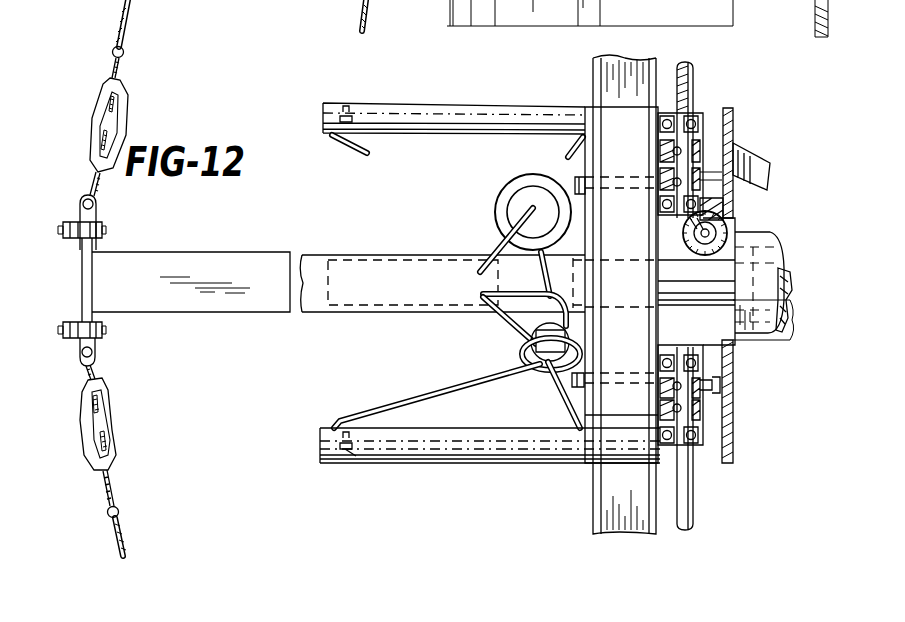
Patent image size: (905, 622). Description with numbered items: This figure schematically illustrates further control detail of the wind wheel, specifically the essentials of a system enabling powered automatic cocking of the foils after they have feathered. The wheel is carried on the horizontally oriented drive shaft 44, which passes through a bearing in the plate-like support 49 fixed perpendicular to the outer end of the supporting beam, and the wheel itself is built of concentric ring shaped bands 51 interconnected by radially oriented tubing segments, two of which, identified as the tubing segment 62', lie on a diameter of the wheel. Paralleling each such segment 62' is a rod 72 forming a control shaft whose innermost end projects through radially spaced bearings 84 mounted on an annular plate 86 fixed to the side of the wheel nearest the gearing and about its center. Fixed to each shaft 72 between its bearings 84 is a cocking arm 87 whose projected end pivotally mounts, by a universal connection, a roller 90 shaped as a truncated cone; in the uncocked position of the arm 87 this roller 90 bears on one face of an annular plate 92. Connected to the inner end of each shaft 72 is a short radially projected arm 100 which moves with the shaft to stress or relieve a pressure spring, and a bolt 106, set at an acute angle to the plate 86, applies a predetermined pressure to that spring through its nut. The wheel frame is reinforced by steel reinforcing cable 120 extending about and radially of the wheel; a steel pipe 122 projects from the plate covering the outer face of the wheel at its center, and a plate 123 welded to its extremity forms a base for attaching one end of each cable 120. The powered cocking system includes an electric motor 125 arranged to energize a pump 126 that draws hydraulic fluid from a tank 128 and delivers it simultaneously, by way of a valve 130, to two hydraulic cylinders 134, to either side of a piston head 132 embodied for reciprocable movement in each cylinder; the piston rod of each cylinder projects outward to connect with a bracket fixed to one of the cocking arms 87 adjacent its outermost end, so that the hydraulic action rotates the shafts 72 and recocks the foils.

The steel reinforcing cable 120 is at (121, 519).
The steel pipe 122 is at (250, 258).
The plate 123 is at (82, 276).
The electric motor 125 is at (511, 186).
The pump 126 is at (536, 190).
The tank 128 is at (397, 258).
The valve 130 is at (535, 341).
The piston head 132 is at (350, 102).
The hydraulic cylinder 134 is at (457, 110).
The tubing segment 62' is at (602, 290).
The rod (control shaft) 72 is at (691, 98).
The bearing 84 is at (702, 124).
The cocking arm 87 is at (668, 146).
The radially projected arm 100 is at (668, 180).
The ring shaped band 51 is at (636, 219).
The roller 90 is at (683, 232).
The bolt 106 is at (730, 190).
The plate-like support 49 is at (770, 240).
The drive shaft 44 is at (786, 276).
The annular plate 92 is at (734, 366).
The annular plate 86 is at (661, 398).